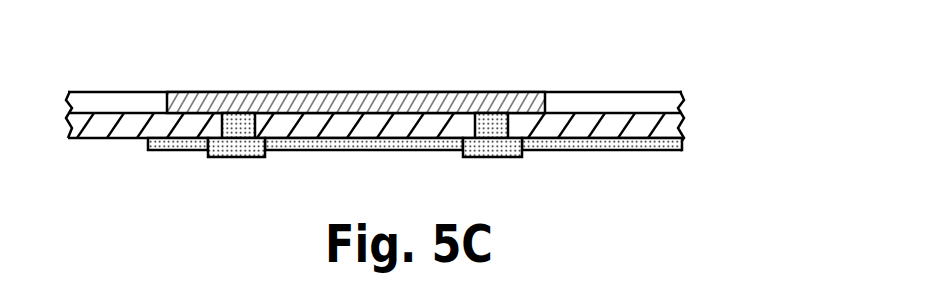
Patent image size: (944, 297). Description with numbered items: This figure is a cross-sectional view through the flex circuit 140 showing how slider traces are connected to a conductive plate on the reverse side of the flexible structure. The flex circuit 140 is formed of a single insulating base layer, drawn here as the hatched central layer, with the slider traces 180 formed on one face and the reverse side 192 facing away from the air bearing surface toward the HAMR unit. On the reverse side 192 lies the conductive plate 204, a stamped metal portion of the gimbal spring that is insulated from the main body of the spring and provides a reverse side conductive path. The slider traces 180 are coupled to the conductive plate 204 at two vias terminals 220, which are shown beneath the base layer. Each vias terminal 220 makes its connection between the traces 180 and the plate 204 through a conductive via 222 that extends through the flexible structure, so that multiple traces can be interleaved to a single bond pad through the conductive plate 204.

The flex circuit 140 is at (429, 107).
The slider traces 180 is at (614, 142).
The reverse side 192 is at (292, 112).
The conductive plate 204 is at (315, 92).
The vias terminals 220 is at (237, 150).
The conductive vias 222 is at (240, 112).